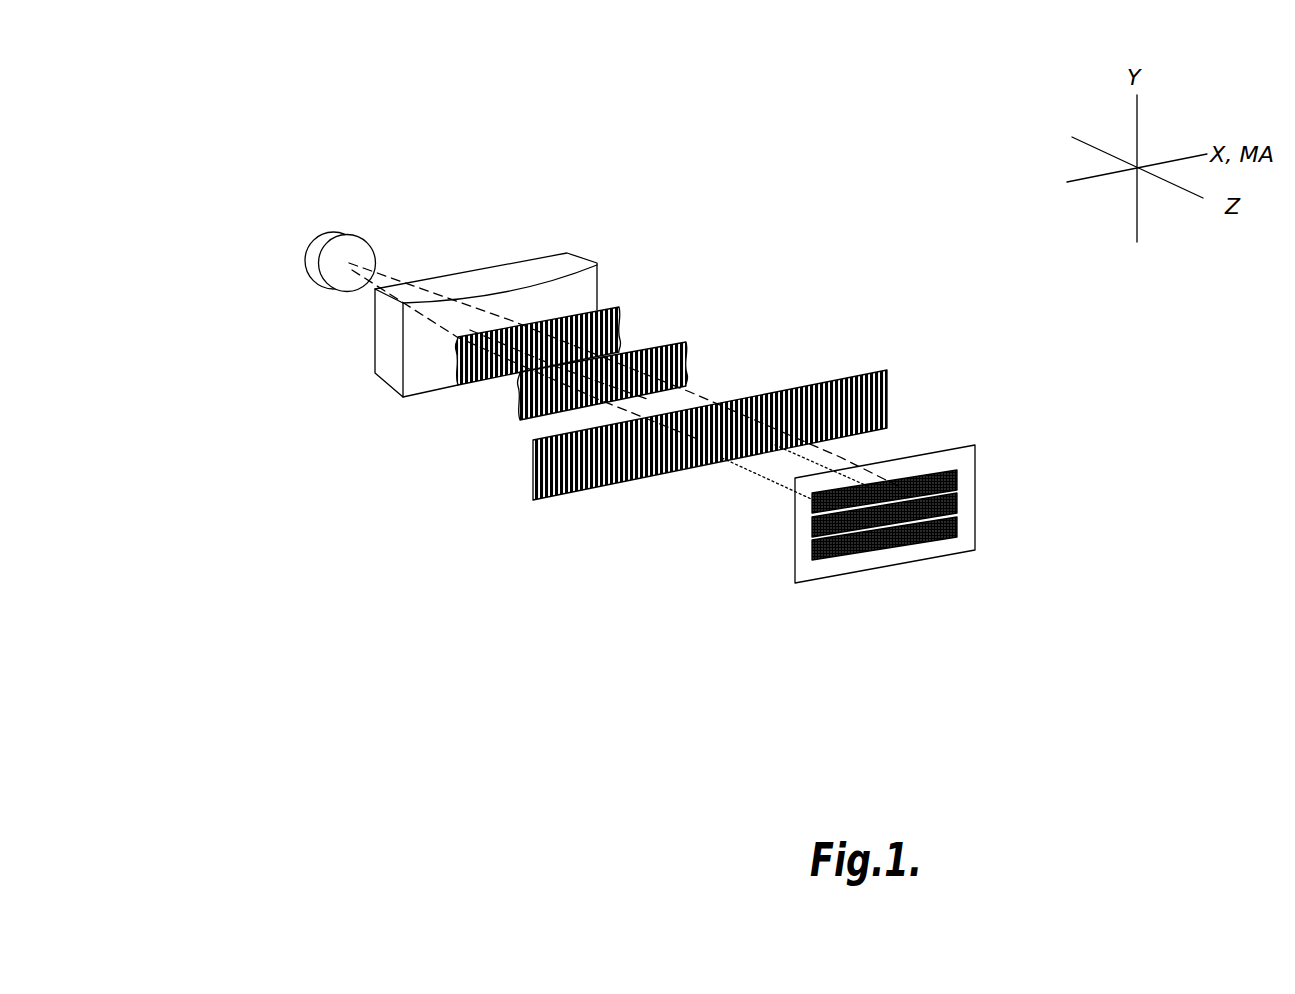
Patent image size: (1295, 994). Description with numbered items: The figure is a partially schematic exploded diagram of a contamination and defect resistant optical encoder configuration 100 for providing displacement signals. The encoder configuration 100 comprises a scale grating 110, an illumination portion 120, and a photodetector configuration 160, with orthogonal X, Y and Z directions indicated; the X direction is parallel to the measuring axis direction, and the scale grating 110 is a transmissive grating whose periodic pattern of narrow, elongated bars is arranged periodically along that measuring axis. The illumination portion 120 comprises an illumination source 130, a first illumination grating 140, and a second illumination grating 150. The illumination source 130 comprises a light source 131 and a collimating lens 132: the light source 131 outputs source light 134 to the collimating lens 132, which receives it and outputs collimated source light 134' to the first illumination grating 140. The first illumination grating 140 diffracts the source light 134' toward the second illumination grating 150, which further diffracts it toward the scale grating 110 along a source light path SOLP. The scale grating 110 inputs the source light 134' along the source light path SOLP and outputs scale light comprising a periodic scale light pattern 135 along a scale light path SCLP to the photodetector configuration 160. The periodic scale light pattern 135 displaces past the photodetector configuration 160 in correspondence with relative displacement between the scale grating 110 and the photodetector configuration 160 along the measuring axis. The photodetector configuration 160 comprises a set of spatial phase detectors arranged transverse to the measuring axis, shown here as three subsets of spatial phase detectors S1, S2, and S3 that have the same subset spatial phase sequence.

The optical encoder configuration 100 is at (813, 241).
The scale grating 110 is at (771, 392).
The illumination portion 120 is at (257, 312).
The illumination source 130 is at (313, 295).
The light source 131 is at (356, 289).
The collimating lens 132 is at (390, 338).
The source light 134 is at (624, 355).
The collimated source light 134' is at (571, 375).
The periodic scale light pattern 135 is at (752, 489).
The first illumination grating 140 is at (453, 371).
The second illumination grating 150 is at (518, 414).
The photodetector configuration 160 is at (901, 538).
The first subset of spatial phase detectors S1 is at (957, 477).
The second subset of spatial phase detectors S2 is at (957, 499).
The third subset of spatial phase detectors S3 is at (957, 525).
The source light path SOLP is at (660, 407).
The scale light path SCLP is at (795, 478).